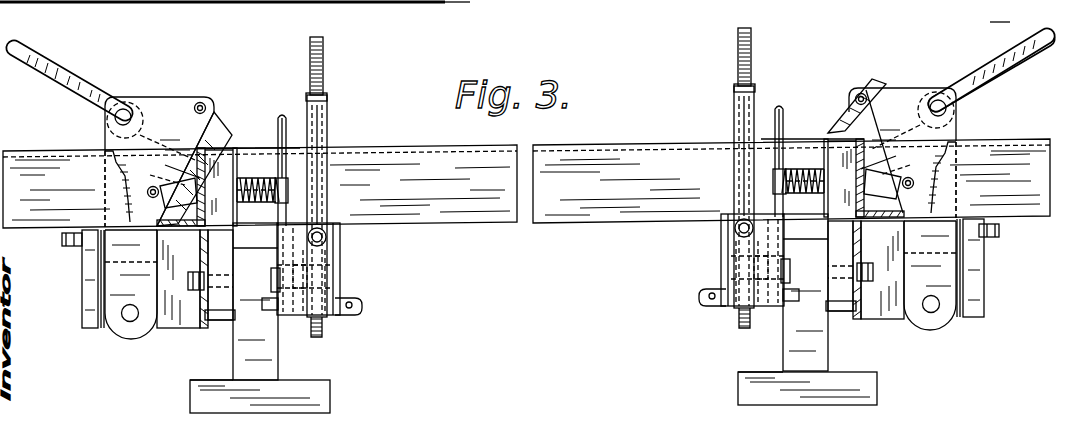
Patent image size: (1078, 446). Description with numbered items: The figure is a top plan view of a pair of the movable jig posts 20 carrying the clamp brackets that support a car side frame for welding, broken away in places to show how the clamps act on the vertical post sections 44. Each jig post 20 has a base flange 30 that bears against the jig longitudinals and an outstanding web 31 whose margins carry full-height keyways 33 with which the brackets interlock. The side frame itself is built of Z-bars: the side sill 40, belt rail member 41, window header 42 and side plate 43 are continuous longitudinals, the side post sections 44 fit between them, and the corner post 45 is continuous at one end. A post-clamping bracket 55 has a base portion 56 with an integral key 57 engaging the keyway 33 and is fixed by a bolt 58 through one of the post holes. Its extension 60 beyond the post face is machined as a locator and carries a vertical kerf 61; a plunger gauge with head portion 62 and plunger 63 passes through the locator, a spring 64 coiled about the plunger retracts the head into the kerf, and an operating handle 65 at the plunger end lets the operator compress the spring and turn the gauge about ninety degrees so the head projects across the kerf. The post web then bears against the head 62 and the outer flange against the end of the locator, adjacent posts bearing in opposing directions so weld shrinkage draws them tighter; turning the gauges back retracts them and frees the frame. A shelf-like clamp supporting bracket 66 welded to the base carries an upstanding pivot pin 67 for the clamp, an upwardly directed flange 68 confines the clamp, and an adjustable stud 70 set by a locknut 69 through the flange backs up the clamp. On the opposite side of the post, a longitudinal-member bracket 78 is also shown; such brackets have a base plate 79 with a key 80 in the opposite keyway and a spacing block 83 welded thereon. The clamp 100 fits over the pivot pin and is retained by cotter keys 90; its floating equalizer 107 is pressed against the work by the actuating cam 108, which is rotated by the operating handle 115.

The jig post 20 is at (332, 396).
The base flange 30 is at (195, 390).
The web portion 31 is at (280, 360).
The keyways 33 is at (215, 318).
The side sill 40 is at (470, 3).
The belt rail member 41 is at (500, 3).
The window header 42 is at (256, 176).
The side plate 43 is at (44, 151).
The side post sections 44 is at (222, 146).
The corner post 45 is at (992, 13).
The bracket 55 is at (80, 288).
The base portion 56 is at (215, 254).
The key 57 is at (232, 293).
The bolt 58 is at (192, 292).
The extension 60 is at (218, 125).
The kerf 61 is at (195, 182).
The head portion 62 is at (178, 170).
The plunger 63 is at (210, 233).
The spring 64 is at (236, 150).
The operating handle 65 is at (283, 117).
The clamp supporting bracket 66 is at (145, 335).
The pivot pin 67 is at (128, 318).
The flange 68 is at (85, 266).
The locknut 69 is at (72, 222).
The stud 70 is at (62, 240).
The slide block 78 is at (341, 249).
The base plate 79 is at (341, 266).
The key 80 is at (274, 283).
The metal block 83 is at (327, 230).
The cotter keys 90 is at (362, 302).
The clamp 100 is at (152, 95).
The equalizer 107 is at (197, 102).
The actuating cam 108 is at (130, 108).
The operating handle 115 is at (48, 60).